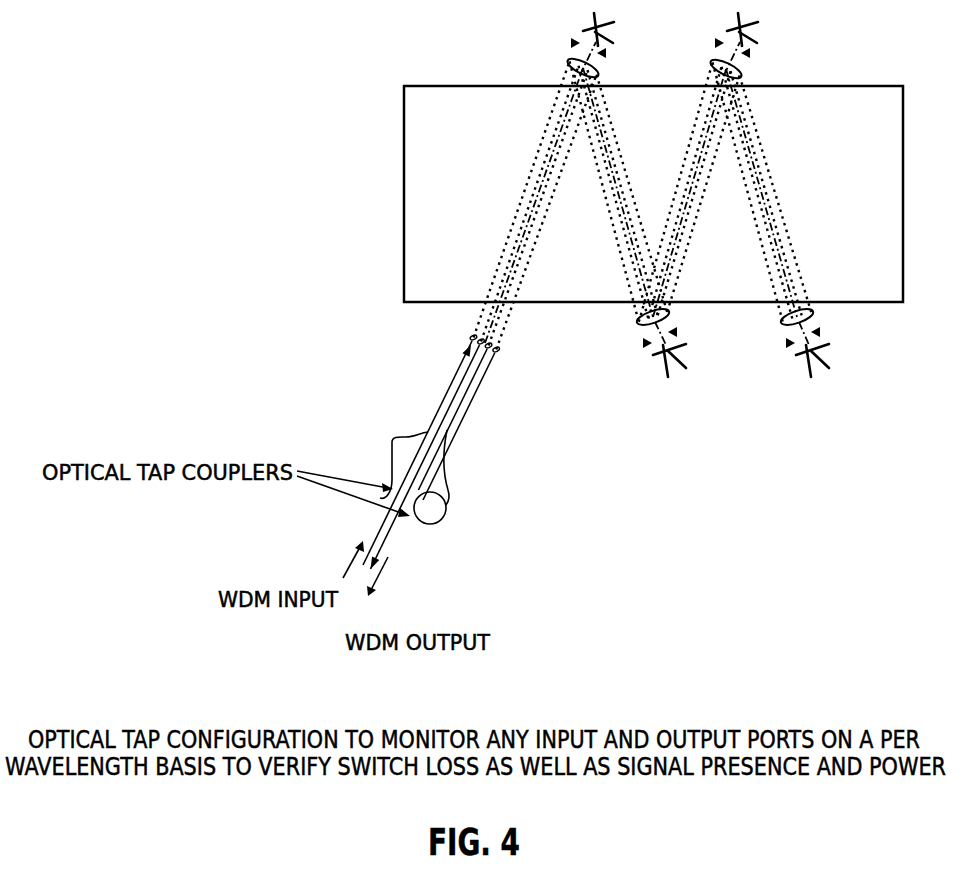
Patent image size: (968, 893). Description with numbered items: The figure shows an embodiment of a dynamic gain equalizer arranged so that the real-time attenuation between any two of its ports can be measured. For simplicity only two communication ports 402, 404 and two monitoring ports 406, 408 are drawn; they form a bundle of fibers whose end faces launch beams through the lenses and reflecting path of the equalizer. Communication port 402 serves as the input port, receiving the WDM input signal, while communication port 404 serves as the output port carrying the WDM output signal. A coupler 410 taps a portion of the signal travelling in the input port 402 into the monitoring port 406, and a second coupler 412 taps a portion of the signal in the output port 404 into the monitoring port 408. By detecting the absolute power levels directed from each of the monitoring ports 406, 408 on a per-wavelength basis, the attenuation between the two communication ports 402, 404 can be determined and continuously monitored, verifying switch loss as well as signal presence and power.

The communication port 402 is at (379, 533).
The communication port 404 is at (384, 542).
The monitoring port 406 is at (454, 379).
The monitoring port 408 is at (477, 390).
The coupler 410 is at (392, 462).
The coupler 412 is at (446, 510).